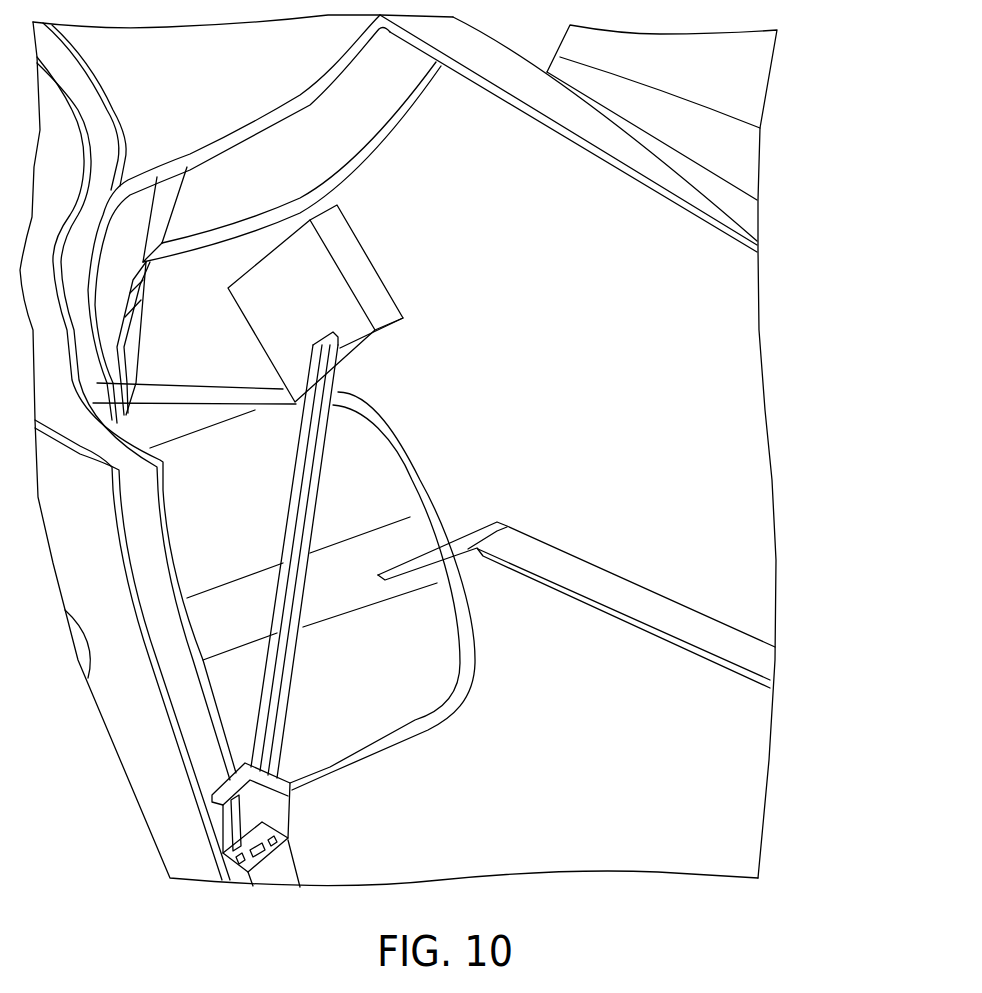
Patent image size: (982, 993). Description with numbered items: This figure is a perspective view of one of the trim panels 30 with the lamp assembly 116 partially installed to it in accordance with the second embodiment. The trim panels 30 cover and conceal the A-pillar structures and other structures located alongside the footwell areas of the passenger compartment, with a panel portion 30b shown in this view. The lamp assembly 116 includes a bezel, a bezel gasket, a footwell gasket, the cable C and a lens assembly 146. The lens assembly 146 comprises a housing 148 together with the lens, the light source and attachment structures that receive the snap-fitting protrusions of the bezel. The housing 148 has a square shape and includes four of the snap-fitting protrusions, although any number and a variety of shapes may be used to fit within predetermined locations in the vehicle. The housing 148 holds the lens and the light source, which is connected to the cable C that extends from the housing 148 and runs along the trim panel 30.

The trim panel 30 is at (636, 247).
The panel portion (30b) / body panel portion (32b) 30b is at (665, 426).
The lamp assembly 116 is at (344, 296).
The lens assembly 146 is at (392, 290).
The housing 148 is at (287, 320).
The cable C is at (296, 680).